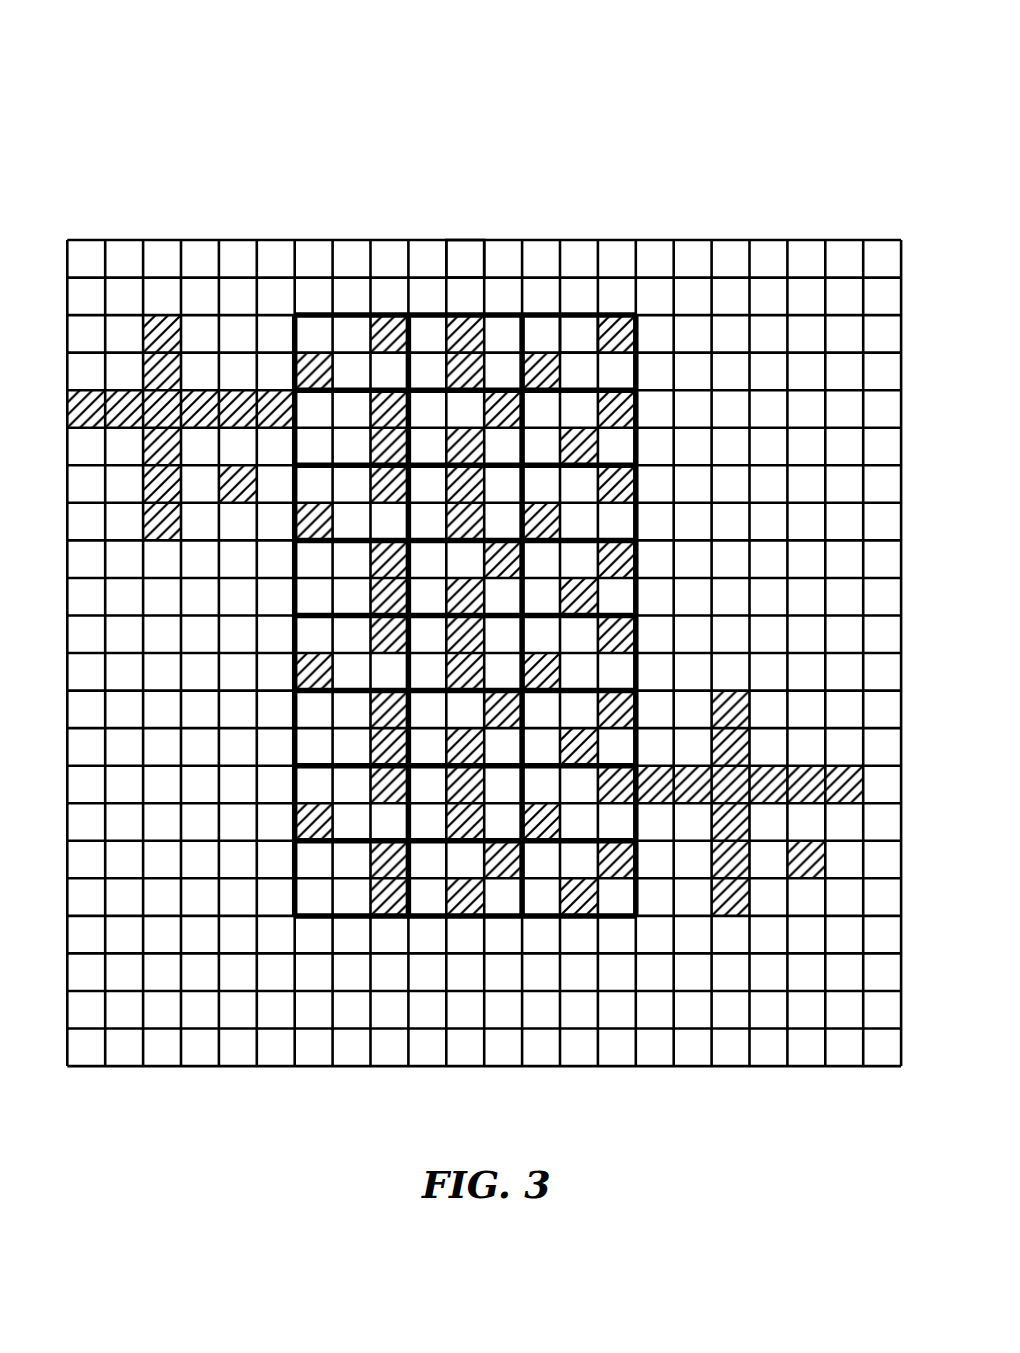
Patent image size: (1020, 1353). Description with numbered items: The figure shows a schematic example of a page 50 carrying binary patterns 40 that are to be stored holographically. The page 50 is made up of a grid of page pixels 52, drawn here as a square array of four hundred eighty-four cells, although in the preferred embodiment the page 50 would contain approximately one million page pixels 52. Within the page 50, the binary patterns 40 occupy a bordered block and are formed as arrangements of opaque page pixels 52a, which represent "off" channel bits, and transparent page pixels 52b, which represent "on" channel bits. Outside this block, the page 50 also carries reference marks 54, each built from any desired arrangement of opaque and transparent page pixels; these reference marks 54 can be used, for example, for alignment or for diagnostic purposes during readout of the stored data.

The page 50 is at (810, 218).
The binary patterns 40 is at (428, 313).
The page pixels 52 is at (463, 258).
The opaque page pixels 52a is at (573, 330).
The transparent page pixels 52b is at (611, 330).
The reference marks 54 is at (162, 316).